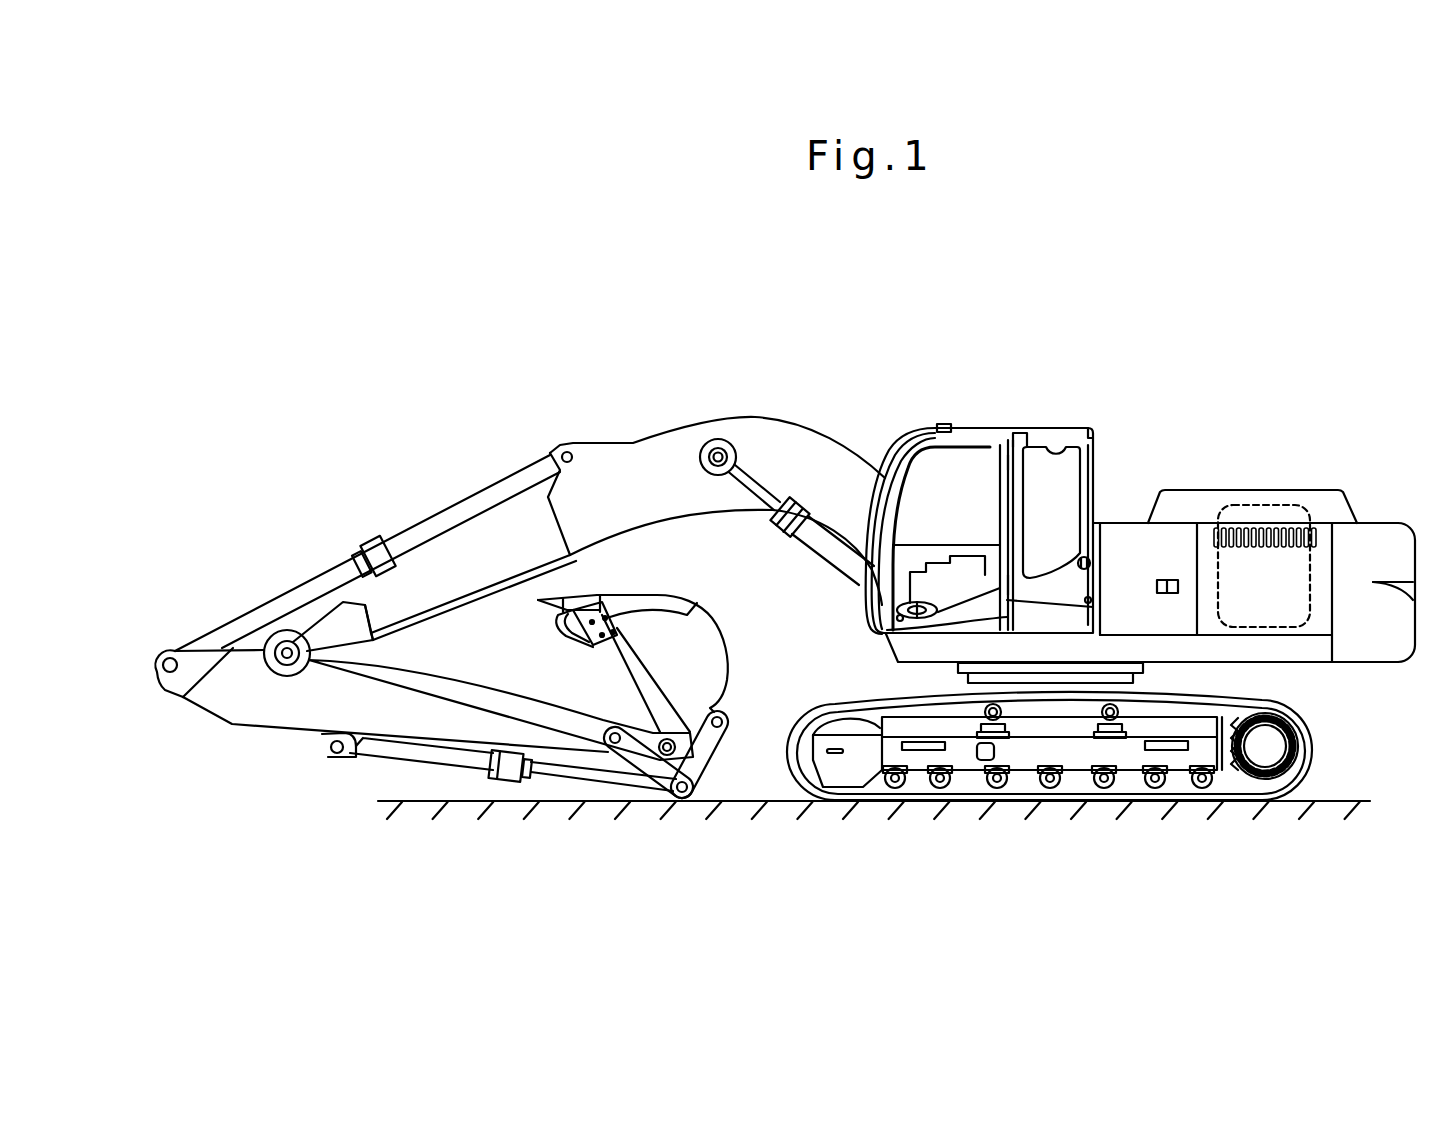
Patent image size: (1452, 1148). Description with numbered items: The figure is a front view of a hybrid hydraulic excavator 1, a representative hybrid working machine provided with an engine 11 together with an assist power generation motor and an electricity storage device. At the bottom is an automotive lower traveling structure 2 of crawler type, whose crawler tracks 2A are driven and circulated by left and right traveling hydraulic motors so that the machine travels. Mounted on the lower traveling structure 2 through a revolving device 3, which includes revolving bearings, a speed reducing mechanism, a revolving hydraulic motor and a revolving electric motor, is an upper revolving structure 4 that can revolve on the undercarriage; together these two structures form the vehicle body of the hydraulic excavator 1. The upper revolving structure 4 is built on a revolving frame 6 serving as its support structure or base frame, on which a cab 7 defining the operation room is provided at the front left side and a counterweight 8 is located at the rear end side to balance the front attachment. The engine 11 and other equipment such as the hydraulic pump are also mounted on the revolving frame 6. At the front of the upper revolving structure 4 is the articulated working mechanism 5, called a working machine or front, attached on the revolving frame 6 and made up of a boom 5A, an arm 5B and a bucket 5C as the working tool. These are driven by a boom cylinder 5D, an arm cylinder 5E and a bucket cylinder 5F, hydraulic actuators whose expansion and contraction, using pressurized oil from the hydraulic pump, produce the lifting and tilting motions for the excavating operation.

The hybrid hydraulic excavator 1 is at (869, 378).
The lower traveling structure 2 is at (1312, 712).
The crawler tracks 2A is at (1314, 762).
The revolving device 3 is at (1135, 676).
The upper revolving structure 4 is at (1060, 400).
The working mechanism 5 is at (709, 405).
The boom 5A is at (620, 500).
The arm 5B is at (268, 700).
The bucket 5C is at (675, 636).
The boom cylinder 5D is at (813, 535).
The arm cylinder 5E is at (416, 540).
The bucket cylinder 5F is at (428, 757).
The revolving frame 6 is at (905, 648).
The cab 7 is at (957, 468).
The counterweight 8 is at (1380, 550).
The engine 11 is at (1218, 574).